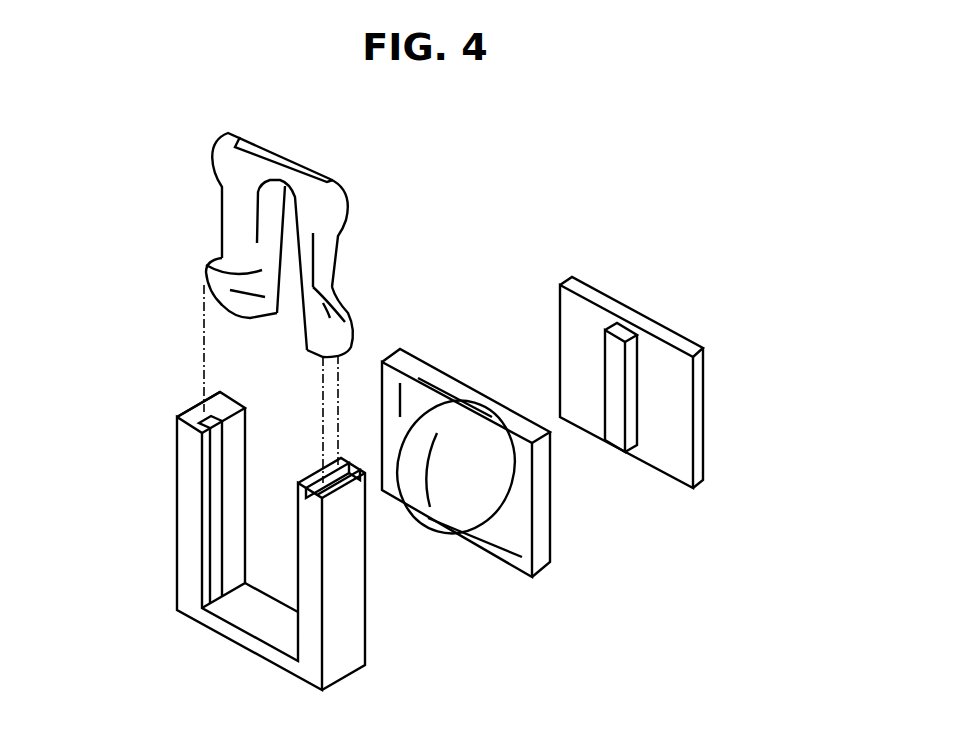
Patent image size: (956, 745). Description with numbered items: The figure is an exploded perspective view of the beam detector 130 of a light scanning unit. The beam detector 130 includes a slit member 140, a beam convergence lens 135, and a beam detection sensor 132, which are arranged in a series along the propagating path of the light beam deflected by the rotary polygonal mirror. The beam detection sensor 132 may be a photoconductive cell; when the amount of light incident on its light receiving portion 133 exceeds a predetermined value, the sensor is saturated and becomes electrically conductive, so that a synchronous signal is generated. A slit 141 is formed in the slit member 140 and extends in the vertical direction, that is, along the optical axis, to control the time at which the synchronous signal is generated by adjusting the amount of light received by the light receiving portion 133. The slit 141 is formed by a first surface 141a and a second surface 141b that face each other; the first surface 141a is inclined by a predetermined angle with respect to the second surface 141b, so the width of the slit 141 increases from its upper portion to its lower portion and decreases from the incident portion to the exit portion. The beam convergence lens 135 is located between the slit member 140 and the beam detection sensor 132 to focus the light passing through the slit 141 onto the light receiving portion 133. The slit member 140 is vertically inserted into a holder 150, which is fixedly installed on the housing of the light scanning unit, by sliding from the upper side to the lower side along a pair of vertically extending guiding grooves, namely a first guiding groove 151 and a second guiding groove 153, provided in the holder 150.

The beam detector 130 is at (520, 180).
The beam detection sensor 132 is at (707, 482).
The light receiving portion 133 is at (620, 330).
The beam convergence lens 135 is at (548, 556).
The slit member 140 is at (272, 148).
The slit 141 is at (268, 229).
The first surface of the slit 141a is at (206, 263).
The second surface of the slit 141b is at (300, 272).
The holder 150 is at (355, 660).
The first guiding groove 151 is at (205, 405).
The second guiding groove 153 is at (316, 478).